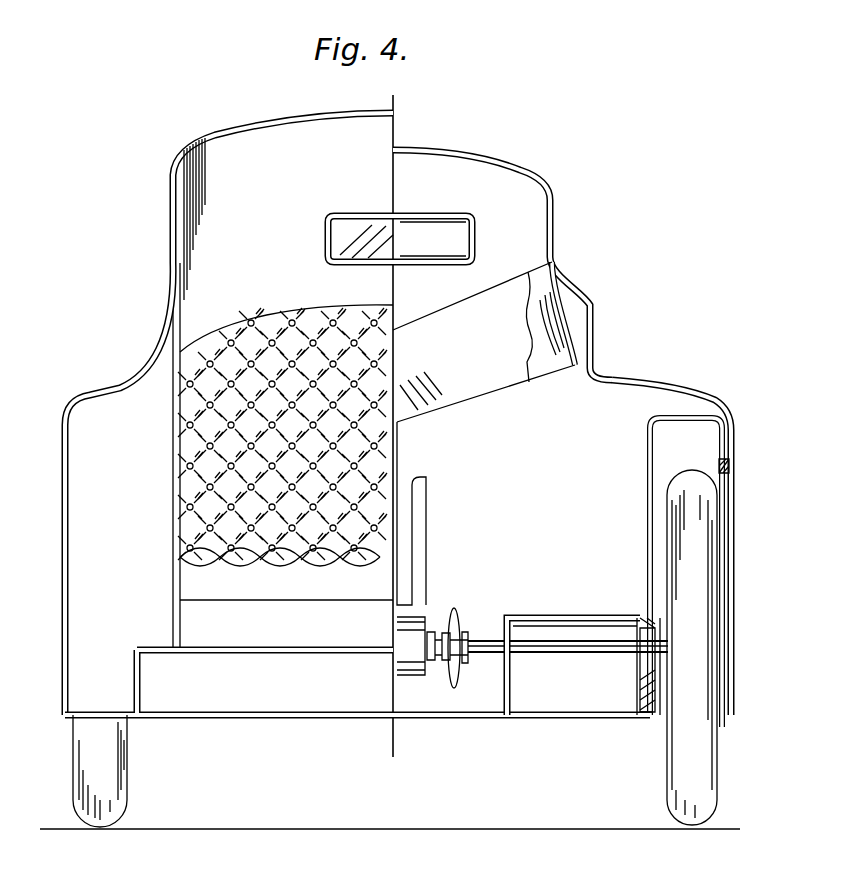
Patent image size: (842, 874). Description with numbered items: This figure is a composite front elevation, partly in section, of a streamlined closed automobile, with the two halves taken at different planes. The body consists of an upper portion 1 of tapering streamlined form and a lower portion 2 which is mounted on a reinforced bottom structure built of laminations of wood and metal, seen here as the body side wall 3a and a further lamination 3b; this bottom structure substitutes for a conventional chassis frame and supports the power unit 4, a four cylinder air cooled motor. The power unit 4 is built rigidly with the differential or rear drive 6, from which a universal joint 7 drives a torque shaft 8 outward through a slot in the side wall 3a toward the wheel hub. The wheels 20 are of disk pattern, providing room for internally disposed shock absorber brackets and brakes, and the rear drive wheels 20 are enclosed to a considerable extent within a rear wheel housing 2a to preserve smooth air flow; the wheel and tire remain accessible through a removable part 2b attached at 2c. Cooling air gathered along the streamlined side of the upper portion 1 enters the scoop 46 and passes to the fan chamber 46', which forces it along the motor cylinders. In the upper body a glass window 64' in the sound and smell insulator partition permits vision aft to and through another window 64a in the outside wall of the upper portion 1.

The upper portion of closed automobile body 1 is at (548, 188).
The lower portion of streamlined body 2 is at (66, 505).
The rear wheel housing 2a is at (705, 446).
The removable part 2b is at (733, 523).
The attachment of removable part 2c is at (730, 467).
The body side wall 3a is at (646, 694).
The bottom portion lamination 3b is at (540, 720).
The power unit 4 is at (425, 541).
The differential or rear drive 6 is at (425, 622).
The universal joint 7 is at (462, 632).
The torque shaft 8 is at (600, 655).
The wheel 20 is at (110, 773).
The scoop 46 is at (577, 322).
The fan chamber 46' is at (484, 348).
The glass window 64' is at (400, 219).
The window 64a is at (440, 230).